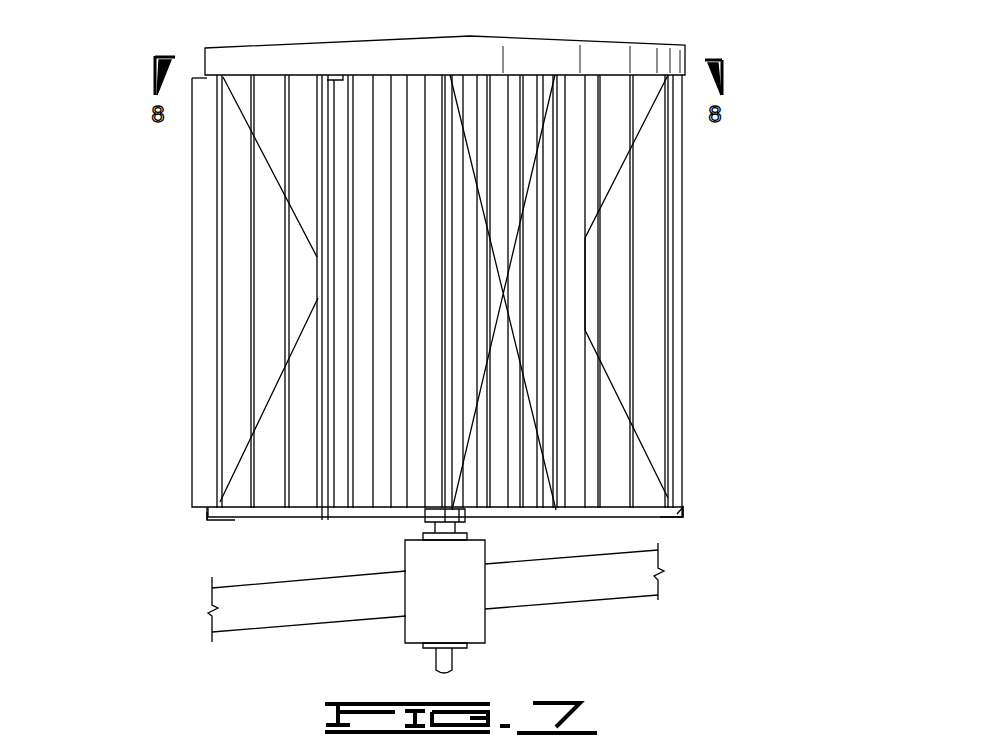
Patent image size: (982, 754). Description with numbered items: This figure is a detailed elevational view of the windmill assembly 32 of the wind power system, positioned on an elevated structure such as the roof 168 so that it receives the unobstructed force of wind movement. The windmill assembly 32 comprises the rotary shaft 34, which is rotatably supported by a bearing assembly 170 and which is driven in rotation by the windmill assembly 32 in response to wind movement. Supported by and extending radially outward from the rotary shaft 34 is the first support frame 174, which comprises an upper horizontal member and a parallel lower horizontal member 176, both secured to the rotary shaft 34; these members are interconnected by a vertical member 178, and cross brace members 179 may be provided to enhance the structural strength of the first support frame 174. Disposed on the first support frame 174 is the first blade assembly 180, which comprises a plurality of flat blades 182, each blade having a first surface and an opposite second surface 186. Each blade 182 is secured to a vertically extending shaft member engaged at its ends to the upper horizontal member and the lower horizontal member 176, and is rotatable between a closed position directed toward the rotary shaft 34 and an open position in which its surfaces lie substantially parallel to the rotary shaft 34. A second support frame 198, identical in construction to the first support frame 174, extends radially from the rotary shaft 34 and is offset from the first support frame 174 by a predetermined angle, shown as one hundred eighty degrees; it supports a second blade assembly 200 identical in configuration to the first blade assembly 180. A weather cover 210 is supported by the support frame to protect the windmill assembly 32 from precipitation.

The windmill assembly 32 is at (652, 38).
The rotary shaft 34 is at (453, 662).
The roof 168 is at (618, 590).
The bearing assembly 170 is at (478, 552).
The first support frame 174 is at (665, 521).
The lower horizontal member 176 is at (622, 513).
The vertical member 178 is at (680, 331).
The cross brace members 179 is at (637, 141).
The first blade assembly 180 is at (653, 273).
The flat blades 182 is at (642, 90).
The second surface 186 is at (665, 244).
The second support frame 198 is at (228, 520).
The second blade assembly 200 is at (240, 383).
The weather cover 210 is at (365, 46).